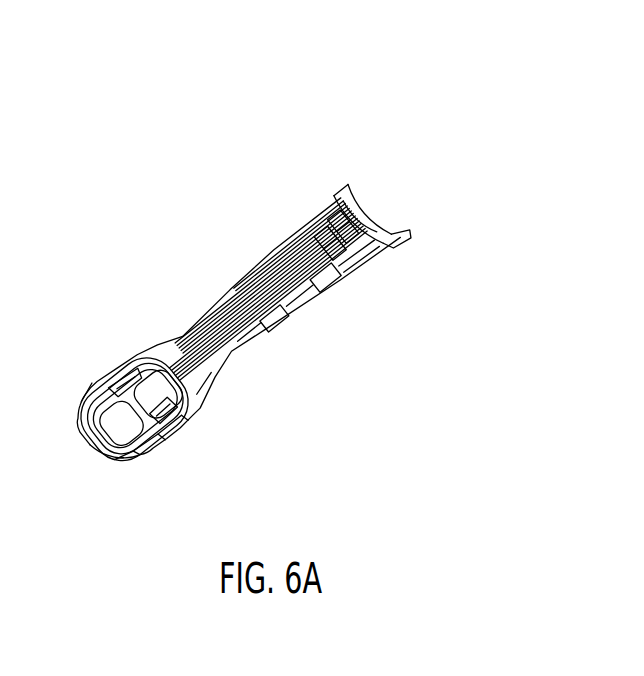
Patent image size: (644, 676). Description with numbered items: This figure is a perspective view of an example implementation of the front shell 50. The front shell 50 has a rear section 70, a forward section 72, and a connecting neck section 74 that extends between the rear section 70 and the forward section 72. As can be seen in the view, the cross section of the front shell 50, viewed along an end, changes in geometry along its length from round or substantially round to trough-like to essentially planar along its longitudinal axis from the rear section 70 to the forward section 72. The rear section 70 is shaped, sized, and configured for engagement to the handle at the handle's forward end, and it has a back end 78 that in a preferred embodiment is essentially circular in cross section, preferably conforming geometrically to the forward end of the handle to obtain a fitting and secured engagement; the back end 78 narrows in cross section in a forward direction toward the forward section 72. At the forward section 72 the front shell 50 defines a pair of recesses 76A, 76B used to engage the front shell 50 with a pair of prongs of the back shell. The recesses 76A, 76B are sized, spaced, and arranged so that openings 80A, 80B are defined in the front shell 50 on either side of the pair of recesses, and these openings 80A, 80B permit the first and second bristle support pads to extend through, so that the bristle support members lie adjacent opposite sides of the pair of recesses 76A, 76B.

The front shell 50 is at (443, 177).
The rear section 70 is at (395, 257).
The forward section 72 is at (175, 424).
The connecting neck section 74 is at (250, 347).
The recess 76A is at (128, 385).
The recess 76B is at (161, 410).
The back end 78 is at (322, 200).
The opening 80A is at (170, 380).
The opening 80B is at (113, 424).